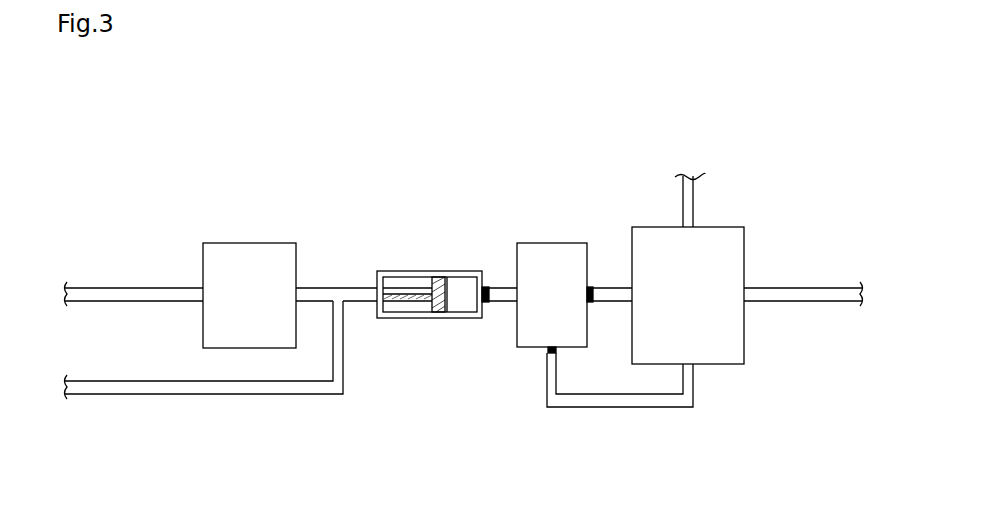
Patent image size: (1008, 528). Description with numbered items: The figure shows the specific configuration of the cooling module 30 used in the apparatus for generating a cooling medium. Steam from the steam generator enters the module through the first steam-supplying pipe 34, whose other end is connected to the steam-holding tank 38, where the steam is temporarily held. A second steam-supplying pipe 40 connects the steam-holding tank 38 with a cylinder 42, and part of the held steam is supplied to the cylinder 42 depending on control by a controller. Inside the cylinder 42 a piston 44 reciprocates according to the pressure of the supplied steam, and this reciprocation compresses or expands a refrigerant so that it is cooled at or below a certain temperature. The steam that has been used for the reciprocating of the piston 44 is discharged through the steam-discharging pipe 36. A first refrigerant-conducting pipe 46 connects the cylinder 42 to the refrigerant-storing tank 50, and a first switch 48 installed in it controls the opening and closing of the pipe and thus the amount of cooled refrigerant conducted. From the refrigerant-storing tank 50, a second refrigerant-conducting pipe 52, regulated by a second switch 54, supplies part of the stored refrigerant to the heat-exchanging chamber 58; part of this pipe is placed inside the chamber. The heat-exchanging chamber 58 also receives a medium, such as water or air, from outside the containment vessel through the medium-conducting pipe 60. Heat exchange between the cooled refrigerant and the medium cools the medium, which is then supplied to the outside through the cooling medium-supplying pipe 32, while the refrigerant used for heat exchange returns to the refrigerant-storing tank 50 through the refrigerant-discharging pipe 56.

The cooling module 30 is at (175, 210).
The cooling medium-supplying pipe 32 is at (833, 286).
The first steam-supplying pipe 34 is at (145, 286).
The steam-discharging pipe 36 is at (145, 396).
The steam-holding tank 38 is at (263, 243).
The second steam-supplying pipe 40 is at (336, 286).
The cylinder 42 is at (430, 270).
The piston 44 is at (438, 313).
The first refrigerant-conducting pipe 46 is at (491, 286).
The first switch 48 is at (490, 303).
The refrigerant-storing tank 50 is at (548, 243).
The second refrigerant-conducting pipe 52 is at (605, 303).
The second switch 54 is at (596, 285).
The refrigerant-discharging pipe 56 is at (615, 409).
The heat-exchanging chamber 58 is at (744, 243).
The medium-conducting pipe 60 is at (693, 193).